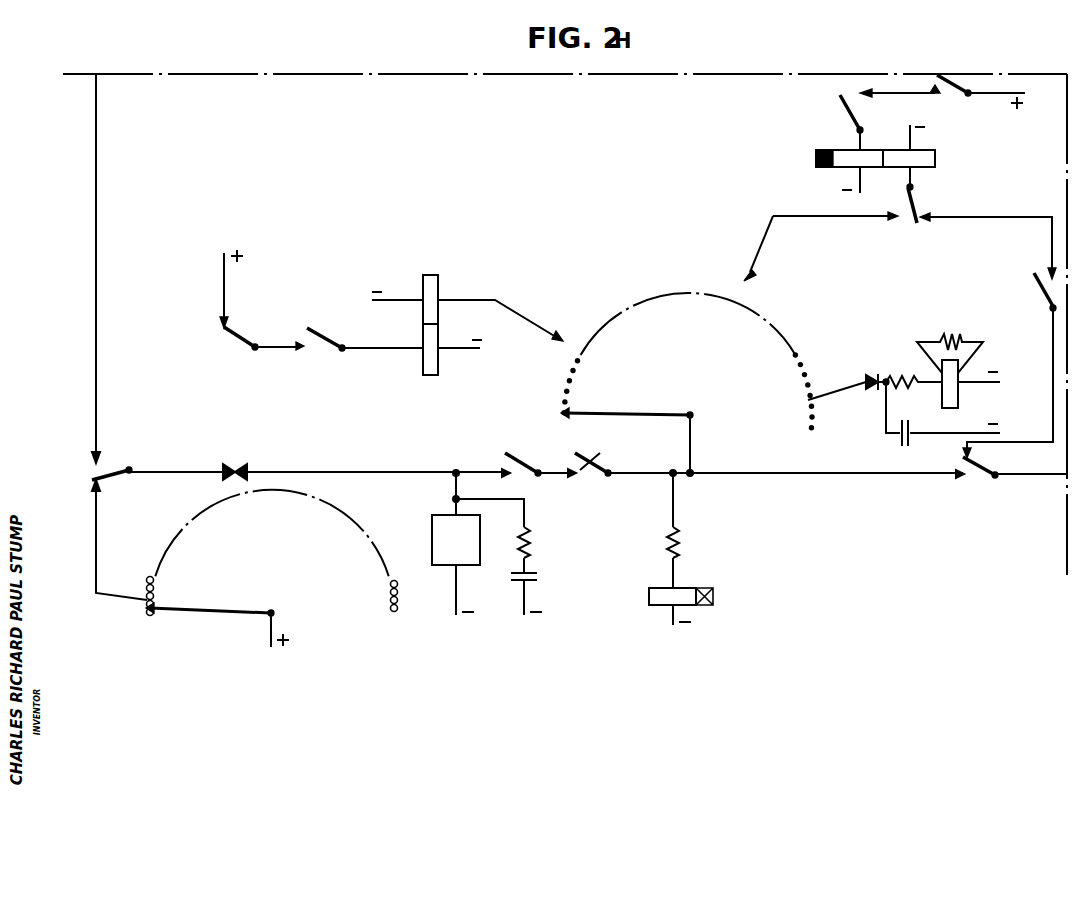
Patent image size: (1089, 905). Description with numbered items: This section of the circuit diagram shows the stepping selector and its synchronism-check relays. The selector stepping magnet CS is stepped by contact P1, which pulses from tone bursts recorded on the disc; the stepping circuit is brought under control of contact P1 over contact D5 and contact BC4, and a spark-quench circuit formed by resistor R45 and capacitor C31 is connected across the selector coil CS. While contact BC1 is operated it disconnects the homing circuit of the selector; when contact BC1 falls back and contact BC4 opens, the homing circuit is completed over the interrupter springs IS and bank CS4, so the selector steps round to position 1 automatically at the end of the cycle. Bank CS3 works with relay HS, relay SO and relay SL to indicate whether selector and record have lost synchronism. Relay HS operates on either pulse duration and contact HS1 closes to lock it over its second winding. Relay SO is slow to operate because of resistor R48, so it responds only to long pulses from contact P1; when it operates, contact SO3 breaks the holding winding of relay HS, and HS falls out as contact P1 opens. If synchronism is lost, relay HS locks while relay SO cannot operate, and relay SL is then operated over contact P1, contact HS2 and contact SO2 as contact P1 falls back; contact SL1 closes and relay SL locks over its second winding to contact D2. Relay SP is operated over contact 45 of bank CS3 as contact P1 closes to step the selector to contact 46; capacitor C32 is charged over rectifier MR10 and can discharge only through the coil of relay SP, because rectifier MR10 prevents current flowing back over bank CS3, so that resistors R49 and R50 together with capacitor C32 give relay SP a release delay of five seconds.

The contact BC1 is at (107, 477).
The interrupter springs IS is at (236, 467).
The bank CS4 is at (272, 568).
The contact BC4 is at (493, 453).
The contact D5 is at (590, 463).
The selector stepping magnet CS is at (433, 541).
The resistor R45 is at (530, 549).
The capacitor C31 is at (536, 574).
The resistor R48 is at (679, 528).
The relay SO is at (713, 600).
The contact P1 is at (970, 478).
The position 1 is at (620, 414).
The bank CS3 is at (687, 362).
The contact 45 is at (810, 388).
The contact 46 is at (813, 386).
The rectifier MR10 is at (868, 380).
The resistor R49 is at (905, 374).
The resistor R50 is at (962, 337).
The relay SP is at (970, 387).
The capacitor C32 is at (918, 452).
The contact HS2 is at (1009, 365).
The contact SO2 is at (920, 214).
The relay SL is at (931, 157).
The contact SL1 is at (851, 107).
The contact D2 is at (948, 92).
The relay HS is at (433, 290).
The contact HS1 is at (320, 349).
The contact SO3 is at (252, 332).